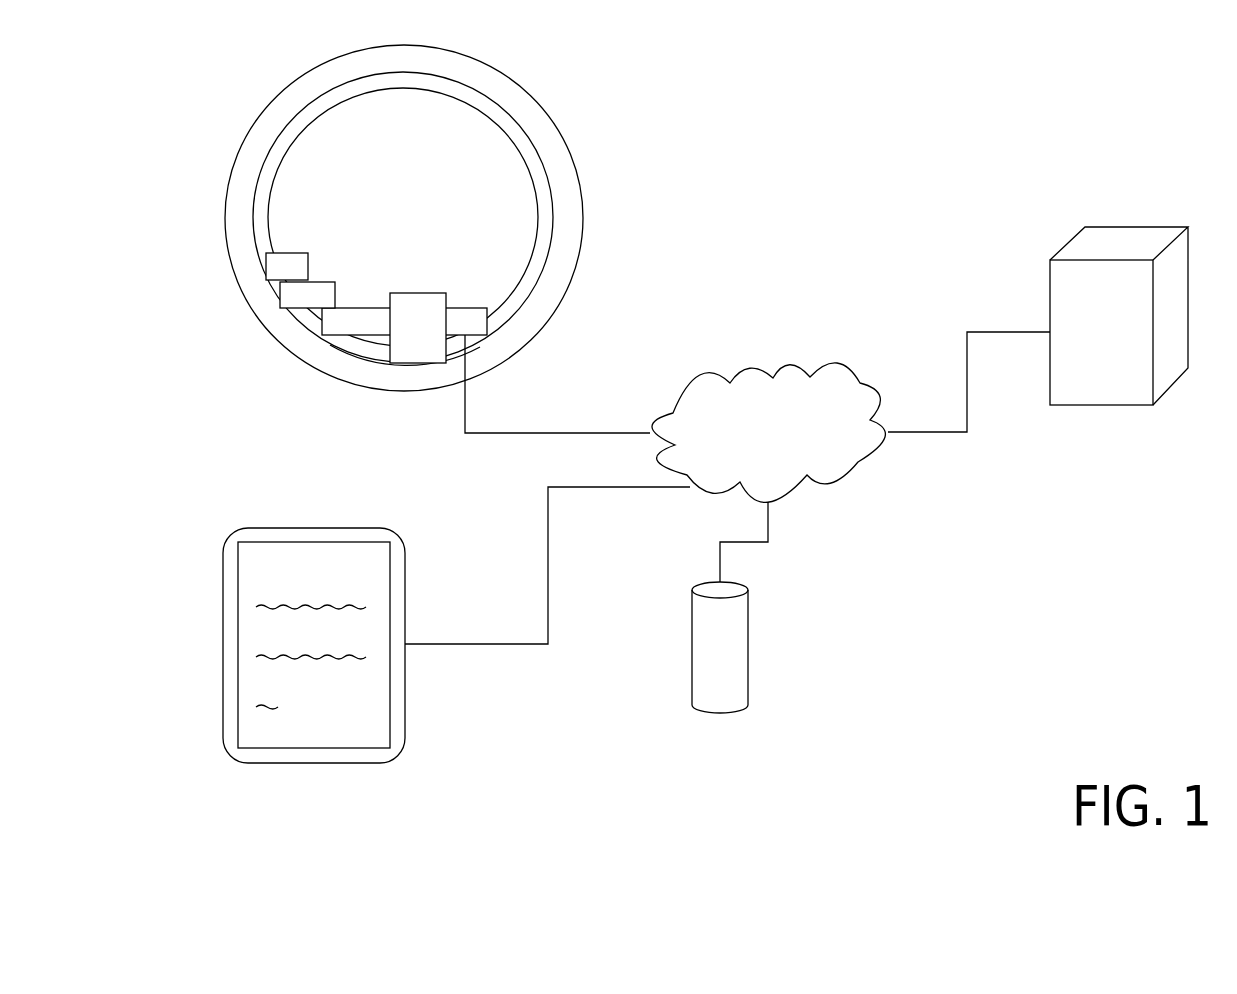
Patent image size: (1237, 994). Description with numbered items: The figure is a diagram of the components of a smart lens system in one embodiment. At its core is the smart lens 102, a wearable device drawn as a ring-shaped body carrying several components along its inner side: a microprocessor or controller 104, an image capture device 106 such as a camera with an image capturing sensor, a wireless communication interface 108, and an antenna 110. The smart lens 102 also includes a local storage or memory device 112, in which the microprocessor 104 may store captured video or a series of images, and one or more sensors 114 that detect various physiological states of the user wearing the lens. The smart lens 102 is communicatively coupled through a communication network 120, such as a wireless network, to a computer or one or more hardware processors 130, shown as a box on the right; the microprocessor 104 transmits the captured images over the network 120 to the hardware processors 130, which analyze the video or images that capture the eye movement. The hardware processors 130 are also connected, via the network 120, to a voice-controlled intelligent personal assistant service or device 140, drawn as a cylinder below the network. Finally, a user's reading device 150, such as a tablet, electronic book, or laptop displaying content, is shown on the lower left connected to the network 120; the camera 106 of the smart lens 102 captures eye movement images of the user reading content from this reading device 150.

The smart lens 102 is at (253, 125).
The microprocessor 104 is at (418, 367).
The image capture device 106 is at (343, 352).
The wireless communication interface 108 is at (493, 322).
The antenna 110 is at (545, 267).
The memory device 112 is at (295, 323).
The sensors 114 is at (270, 293).
The communication network 120 is at (843, 362).
The hardware processors 130 is at (1173, 222).
The voice-controlled intelligent personal assistant device 140 is at (748, 665).
The user's reading device 150 is at (225, 573).